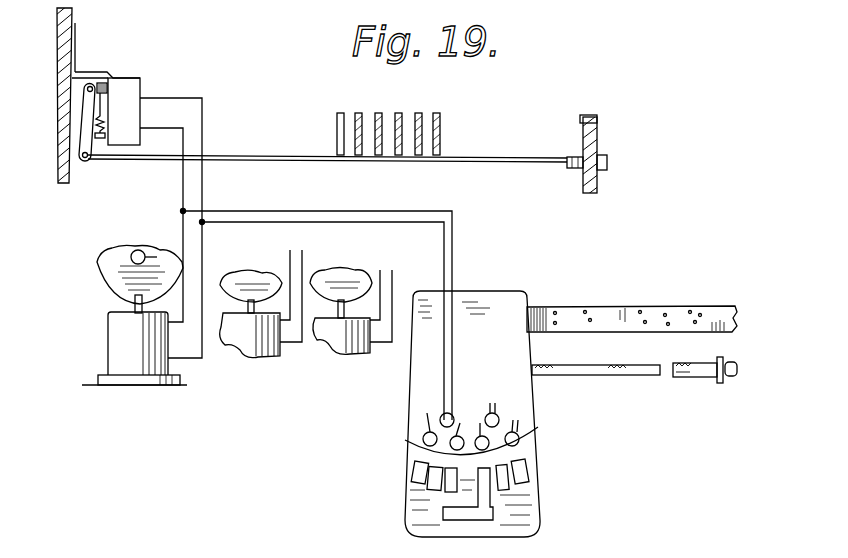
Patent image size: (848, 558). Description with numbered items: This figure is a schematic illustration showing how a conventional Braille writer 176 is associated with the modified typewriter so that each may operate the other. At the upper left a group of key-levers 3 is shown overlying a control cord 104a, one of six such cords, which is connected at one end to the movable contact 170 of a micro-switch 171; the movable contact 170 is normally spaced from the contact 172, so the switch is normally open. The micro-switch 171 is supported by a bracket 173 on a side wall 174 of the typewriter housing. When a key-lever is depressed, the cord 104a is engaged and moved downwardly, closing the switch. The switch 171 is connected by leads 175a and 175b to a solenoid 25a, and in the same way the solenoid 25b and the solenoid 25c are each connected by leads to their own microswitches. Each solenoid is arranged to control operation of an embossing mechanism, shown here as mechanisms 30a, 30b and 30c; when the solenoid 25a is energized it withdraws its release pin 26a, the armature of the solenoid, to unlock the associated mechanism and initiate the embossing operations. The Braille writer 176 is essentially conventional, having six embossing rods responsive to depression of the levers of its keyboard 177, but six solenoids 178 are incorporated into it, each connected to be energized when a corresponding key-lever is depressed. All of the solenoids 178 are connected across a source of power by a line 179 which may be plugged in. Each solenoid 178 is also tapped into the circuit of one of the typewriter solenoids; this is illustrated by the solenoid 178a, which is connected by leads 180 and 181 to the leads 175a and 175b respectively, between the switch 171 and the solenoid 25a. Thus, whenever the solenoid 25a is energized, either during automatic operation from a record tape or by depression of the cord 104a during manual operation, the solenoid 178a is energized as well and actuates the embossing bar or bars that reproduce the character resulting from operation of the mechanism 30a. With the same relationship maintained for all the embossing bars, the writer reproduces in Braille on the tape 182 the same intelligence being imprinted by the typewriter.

The key-levers 3 is at (442, 104).
The solenoid 25a is at (118, 362).
The solenoid 25b is at (248, 347).
The solenoid 25c is at (330, 350).
The release pin 26a is at (130, 305).
The mechanism 30a is at (108, 281).
The mechanism 30b is at (244, 282).
The mechanism 30c is at (337, 280).
The control cord 104a is at (490, 161).
The movable contact 170 is at (72, 153).
The micro-switch 171 is at (140, 88).
The contact 172 is at (100, 140).
The bracket 173 is at (77, 52).
The side wall 174 is at (60, 145).
The lead 175a is at (183, 211).
The lead 175b is at (202, 194).
The Braille writer 176 is at (526, 395).
The keyboard 177 is at (522, 503).
The solenoids 178 is at (490, 405).
The solenoid 178a is at (438, 408).
The line 179 is at (618, 376).
The lead 180 is at (452, 246).
The lead 181 is at (407, 224).
The tape 182 is at (674, 307).